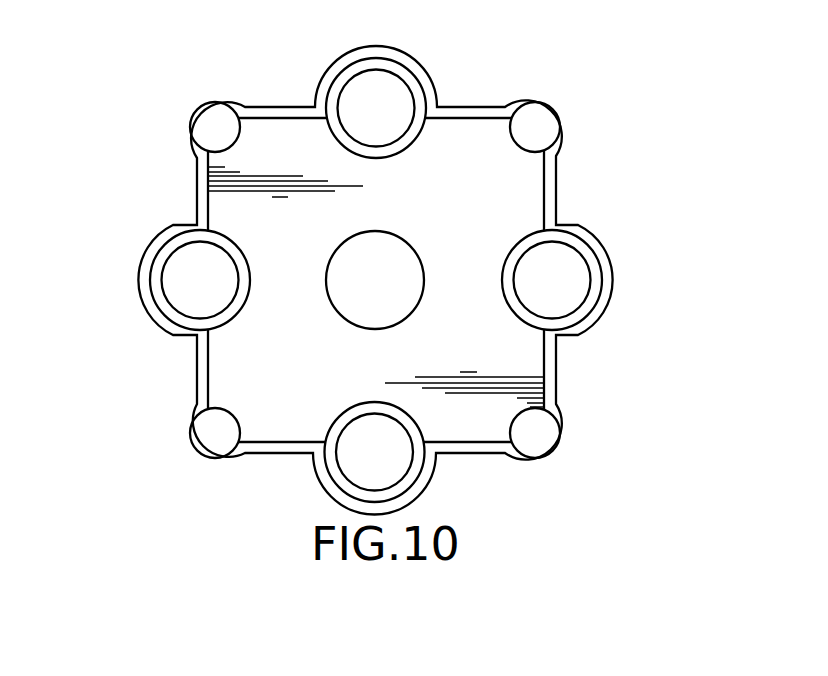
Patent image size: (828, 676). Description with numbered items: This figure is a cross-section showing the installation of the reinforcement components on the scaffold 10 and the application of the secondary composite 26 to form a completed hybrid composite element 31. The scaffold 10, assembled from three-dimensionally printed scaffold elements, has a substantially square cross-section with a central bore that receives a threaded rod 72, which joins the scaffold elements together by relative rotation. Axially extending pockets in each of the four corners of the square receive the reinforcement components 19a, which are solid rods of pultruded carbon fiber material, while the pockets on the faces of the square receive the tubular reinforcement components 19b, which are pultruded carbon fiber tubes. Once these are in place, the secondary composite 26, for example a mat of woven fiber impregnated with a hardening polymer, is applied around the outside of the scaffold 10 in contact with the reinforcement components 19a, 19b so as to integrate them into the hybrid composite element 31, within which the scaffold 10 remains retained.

The hybrid composite element 31 is at (148, 127).
The tubular reinforcement components 19b is at (386, 95).
The reinforcement components 19a is at (535, 122).
The secondary composite 26 is at (605, 278).
The threaded rod 72 is at (343, 290).
The scaffold 10 is at (515, 363).